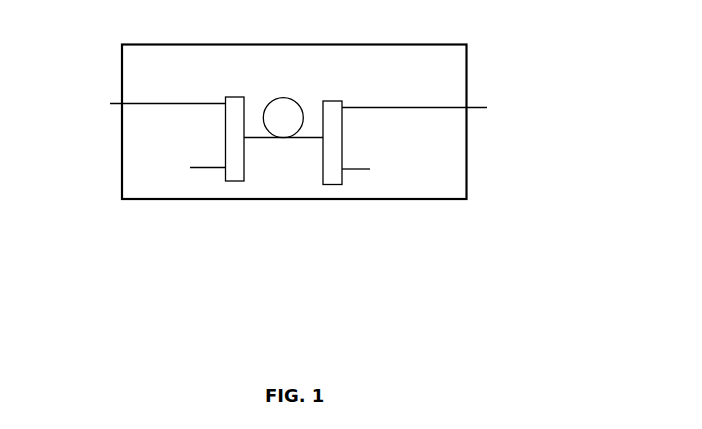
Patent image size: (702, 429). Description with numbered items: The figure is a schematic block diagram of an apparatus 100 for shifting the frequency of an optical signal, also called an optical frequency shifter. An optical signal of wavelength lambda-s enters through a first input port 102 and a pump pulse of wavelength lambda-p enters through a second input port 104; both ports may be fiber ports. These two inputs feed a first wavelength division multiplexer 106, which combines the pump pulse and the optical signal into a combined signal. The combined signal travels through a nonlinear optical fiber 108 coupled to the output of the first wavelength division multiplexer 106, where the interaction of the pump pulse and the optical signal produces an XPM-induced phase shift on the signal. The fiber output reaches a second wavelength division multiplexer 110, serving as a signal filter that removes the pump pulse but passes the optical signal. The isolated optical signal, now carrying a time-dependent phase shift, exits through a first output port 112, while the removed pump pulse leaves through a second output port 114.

The apparatus 100 is at (447, 44).
The first input port 102 is at (137, 103).
The second input port 104 is at (196, 168).
The first wavelength division multiplexer 106 is at (235, 97).
The nonlinear optical fiber 108 is at (286, 98).
The second wavelength division multiplexer 110 is at (335, 101).
The first output port 112 is at (416, 107).
The second output port 114 is at (357, 168).